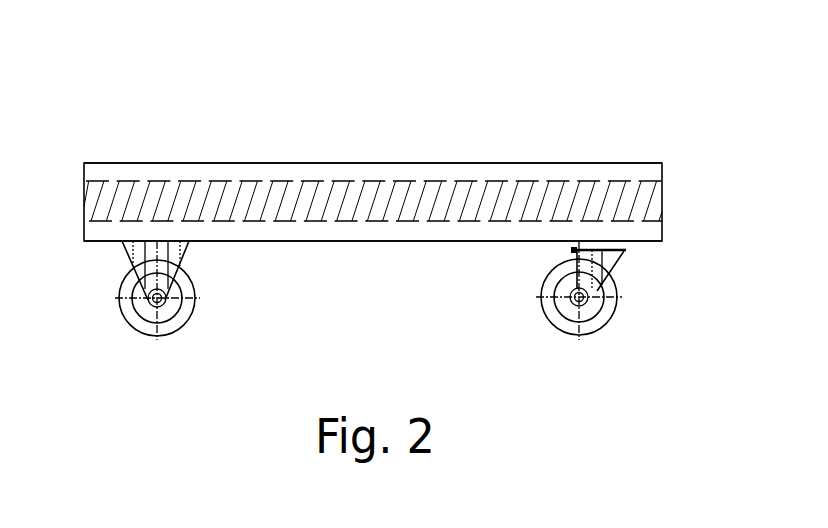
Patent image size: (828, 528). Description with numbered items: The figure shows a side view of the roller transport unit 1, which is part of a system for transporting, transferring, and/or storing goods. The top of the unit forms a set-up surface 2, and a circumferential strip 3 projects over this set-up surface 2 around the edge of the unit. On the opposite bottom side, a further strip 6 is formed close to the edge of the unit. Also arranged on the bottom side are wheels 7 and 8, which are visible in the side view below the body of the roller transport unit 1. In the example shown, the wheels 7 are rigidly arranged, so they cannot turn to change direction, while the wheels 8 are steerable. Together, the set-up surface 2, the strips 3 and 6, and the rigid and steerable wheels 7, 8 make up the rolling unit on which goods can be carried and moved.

The roller transport unit 1 is at (328, 143).
The set-up surface 2 is at (381, 180).
The circumferential strip 3 is at (511, 177).
The strip 6 is at (390, 242).
The wheels 7 is at (132, 307).
The wheels 8 is at (612, 285).